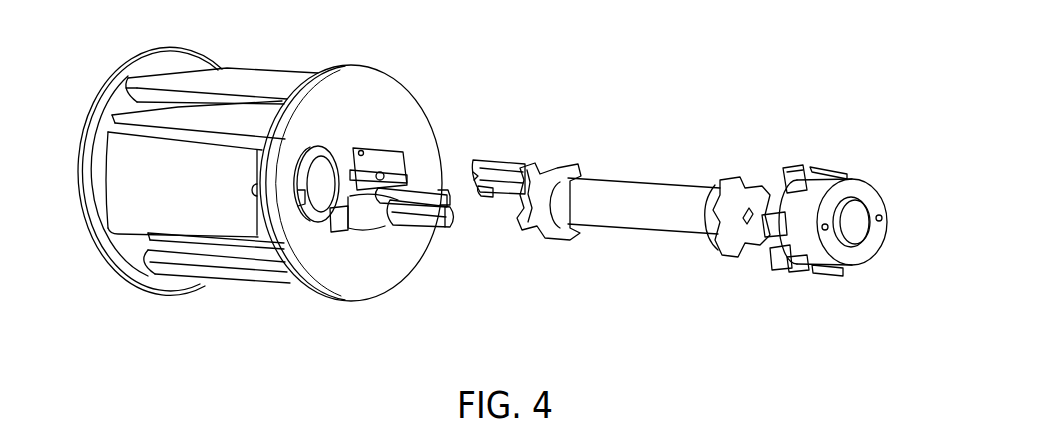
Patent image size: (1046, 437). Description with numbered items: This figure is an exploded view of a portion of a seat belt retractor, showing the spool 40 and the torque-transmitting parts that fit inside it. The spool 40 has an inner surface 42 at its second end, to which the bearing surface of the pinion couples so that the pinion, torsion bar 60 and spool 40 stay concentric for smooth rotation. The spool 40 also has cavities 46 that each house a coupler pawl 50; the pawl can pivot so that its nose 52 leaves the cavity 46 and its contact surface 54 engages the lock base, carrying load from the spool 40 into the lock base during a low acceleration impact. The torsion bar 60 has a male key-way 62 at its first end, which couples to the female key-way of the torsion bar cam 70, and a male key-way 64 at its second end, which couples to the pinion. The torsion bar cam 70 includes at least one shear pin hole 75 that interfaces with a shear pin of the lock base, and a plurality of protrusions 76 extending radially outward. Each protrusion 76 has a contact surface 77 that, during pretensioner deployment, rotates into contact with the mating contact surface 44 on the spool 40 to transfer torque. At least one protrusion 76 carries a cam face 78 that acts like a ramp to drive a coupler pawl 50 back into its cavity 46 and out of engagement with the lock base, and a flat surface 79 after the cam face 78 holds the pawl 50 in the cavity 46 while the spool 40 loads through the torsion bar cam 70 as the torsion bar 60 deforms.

The spool 40 is at (260, 208).
The inner surface 42 is at (323, 180).
The mating contact surface 44 is at (353, 208).
The cavity 46 is at (403, 172).
The coupler pawl 50 is at (542, 191).
The nose 52 is at (447, 198).
The contact surface 54 is at (444, 214).
The torsion bar 60 is at (646, 167).
The male key-way 62 is at (721, 249).
The male key-way 64 is at (548, 238).
The torsion bar cam 70 is at (828, 211).
The shear pin hole 75 is at (884, 217).
The protrusion 76 is at (800, 172).
The contact surface 77 is at (812, 172).
The cam face 78 is at (768, 234).
The flat surface 79 is at (782, 272).